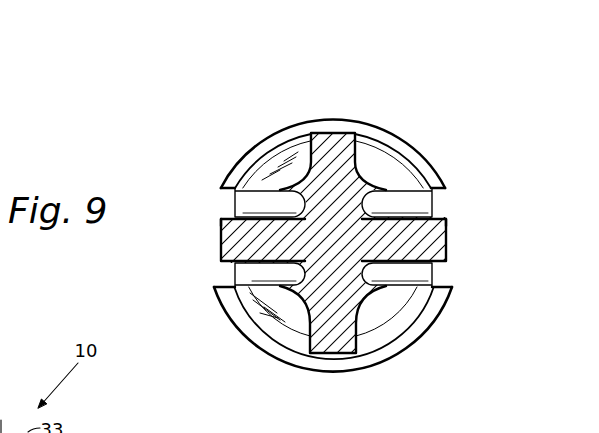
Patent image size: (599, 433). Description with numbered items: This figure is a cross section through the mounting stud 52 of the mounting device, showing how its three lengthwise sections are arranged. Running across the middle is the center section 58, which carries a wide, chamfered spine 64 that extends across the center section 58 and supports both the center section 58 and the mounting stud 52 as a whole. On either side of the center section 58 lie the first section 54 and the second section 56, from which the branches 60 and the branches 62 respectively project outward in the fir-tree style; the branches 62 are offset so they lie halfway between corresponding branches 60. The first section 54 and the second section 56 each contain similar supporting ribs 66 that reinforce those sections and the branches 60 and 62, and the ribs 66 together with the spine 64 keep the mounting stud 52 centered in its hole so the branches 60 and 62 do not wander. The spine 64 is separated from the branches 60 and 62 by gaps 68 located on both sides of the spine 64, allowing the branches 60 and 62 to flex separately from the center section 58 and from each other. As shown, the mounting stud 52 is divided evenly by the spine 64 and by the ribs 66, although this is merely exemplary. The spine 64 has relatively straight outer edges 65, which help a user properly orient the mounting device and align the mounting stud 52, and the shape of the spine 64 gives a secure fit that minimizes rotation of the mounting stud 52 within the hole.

The mounting stud 52 is at (424, 131).
The first section 54 is at (332, 133).
The second section 56 is at (330, 353).
The center section 58 is at (330, 241).
The branches 60 is at (265, 168).
The branches 62 is at (268, 320).
The chamfered spine 64 is at (427, 243).
The outer edges 65 is at (219, 224).
The supporting ribs 66 is at (301, 143).
The gaps 68 is at (247, 203).